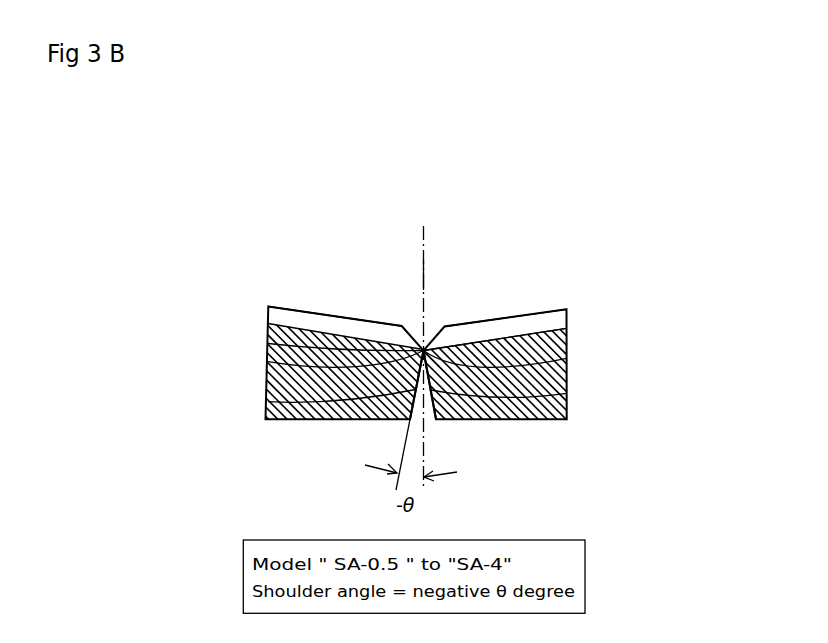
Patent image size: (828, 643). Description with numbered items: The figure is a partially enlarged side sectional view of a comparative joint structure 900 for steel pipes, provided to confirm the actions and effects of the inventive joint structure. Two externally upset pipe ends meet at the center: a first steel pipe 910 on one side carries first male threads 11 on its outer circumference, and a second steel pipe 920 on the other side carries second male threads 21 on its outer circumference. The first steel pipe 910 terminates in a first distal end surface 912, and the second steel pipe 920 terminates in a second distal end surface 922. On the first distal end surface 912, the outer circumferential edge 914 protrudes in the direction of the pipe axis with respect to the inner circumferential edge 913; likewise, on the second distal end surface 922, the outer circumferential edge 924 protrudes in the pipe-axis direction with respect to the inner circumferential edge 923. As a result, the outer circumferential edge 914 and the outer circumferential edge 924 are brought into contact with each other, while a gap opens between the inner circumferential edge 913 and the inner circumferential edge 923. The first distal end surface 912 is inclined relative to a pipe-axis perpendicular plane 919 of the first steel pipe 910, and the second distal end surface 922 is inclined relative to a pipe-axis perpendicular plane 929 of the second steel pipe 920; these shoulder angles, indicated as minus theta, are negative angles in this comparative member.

The joint structure 900 is at (245, 217).
The first male threads 11 is at (272, 316).
The second male threads 21 is at (548, 314).
The first steel pipe 910 is at (268, 345).
The outer circumferential edge 914 is at (268, 362).
The first distal end surface 912 is at (268, 401).
The inner circumferential edge 913 is at (409, 420).
The pipe-axis perpendicular plane 919 is at (424, 248).
The pipe-axis perpendicular plane 929 is at (425, 275).
The second steel pipe 920 is at (567, 343).
The outer circumferential edge 924 is at (567, 360).
The second distal end surface 922 is at (567, 390).
The inner circumferential edge 923 is at (436, 420).